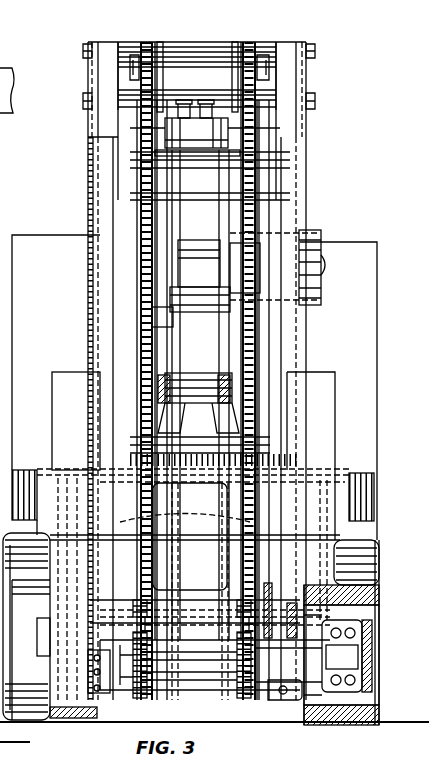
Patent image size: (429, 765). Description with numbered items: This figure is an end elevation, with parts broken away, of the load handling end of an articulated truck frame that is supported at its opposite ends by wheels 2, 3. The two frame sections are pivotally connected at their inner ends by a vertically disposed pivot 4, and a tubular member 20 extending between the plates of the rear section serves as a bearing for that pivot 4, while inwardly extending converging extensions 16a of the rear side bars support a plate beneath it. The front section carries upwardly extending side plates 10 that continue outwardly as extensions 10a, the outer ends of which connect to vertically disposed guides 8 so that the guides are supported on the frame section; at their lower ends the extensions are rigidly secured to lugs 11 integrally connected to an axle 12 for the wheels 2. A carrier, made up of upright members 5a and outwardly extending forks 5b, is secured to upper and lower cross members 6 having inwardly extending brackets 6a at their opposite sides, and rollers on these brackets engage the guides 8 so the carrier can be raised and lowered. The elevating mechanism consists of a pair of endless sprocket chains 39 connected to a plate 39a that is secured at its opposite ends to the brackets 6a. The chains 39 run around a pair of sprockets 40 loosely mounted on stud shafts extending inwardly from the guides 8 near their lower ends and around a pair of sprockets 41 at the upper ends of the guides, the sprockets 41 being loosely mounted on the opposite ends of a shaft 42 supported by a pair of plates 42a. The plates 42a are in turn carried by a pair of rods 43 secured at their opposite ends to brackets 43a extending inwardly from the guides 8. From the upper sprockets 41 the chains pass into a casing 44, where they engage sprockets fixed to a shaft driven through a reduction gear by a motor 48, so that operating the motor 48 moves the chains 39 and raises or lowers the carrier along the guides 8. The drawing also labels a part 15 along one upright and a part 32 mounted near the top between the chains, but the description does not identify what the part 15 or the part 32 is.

The wheels 2 is at (362, 590).
The wheels 3 is at (378, 565).
The pivot 4 is at (128, 236).
The upright members 5a is at (62, 378).
The forks 5b is at (100, 713).
The cross members 6 is at (183, 537).
The brackets 6a is at (185, 513).
The guides 8 is at (100, 263).
The side plates 10 is at (90, 185).
The extensions 10a is at (262, 205).
The lugs 11 is at (210, 636).
The axle 12 is at (300, 690).
The upright plate 15 is at (122, 172).
The converging extensions 16a is at (358, 476).
The tubular member 20 is at (215, 492).
The drive unit 32 is at (205, 128).
The endless sprocket chains 39 is at (140, 128).
The plate 39a is at (172, 628).
The sprockets 40 is at (255, 690).
The sprockets 41 is at (148, 50).
The shaft 42 is at (185, 58).
The plates 42a is at (162, 42).
The rods 43 is at (140, 44).
The brackets 43a is at (90, 79).
The casing 44 is at (215, 350).
The motor 48 is at (315, 250).